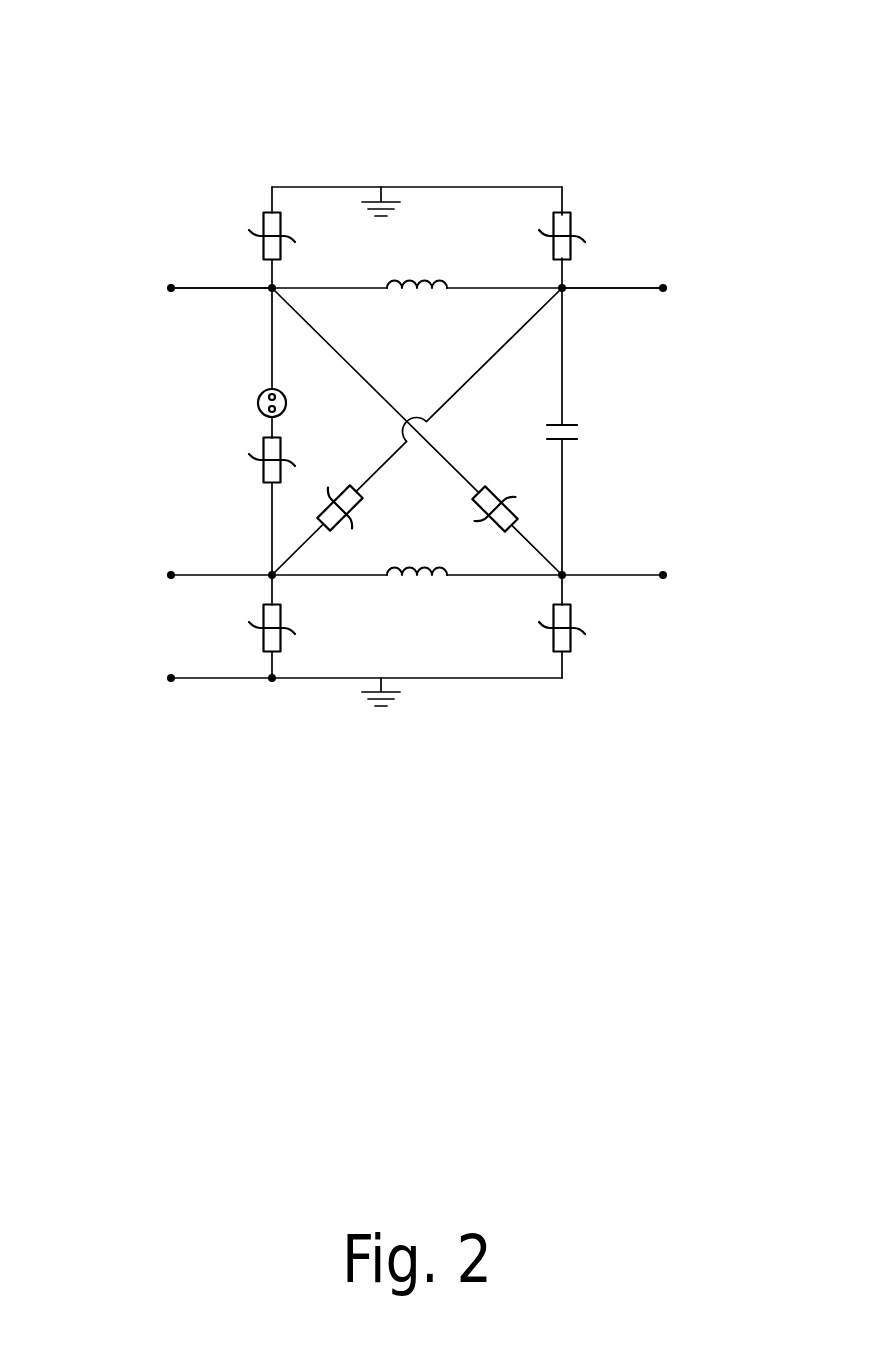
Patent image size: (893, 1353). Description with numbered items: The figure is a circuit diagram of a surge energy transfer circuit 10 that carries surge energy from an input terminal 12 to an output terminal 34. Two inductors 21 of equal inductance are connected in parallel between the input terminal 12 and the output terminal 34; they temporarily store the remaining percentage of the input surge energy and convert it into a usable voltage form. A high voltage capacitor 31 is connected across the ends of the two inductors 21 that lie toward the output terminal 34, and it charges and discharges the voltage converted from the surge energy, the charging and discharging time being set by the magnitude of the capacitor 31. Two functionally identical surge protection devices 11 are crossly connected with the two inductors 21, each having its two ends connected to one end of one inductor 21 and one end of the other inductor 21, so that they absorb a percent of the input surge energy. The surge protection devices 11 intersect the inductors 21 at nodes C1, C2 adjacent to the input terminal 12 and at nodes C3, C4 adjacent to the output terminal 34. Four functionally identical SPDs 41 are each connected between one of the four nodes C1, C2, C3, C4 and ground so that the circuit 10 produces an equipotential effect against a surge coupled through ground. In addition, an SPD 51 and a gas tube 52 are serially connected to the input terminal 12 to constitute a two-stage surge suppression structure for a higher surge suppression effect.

The surge energy transfer circuit 10 is at (655, 50).
The surge protection device 11 is at (320, 513).
The input terminal 12 is at (203, 287).
The inductor 21 is at (423, 285).
The high voltage capacitor 31 is at (580, 432).
The output terminal 34 is at (632, 287).
The SPD 41 is at (268, 222).
The SPD 51 is at (265, 452).
The gas tube 52 is at (258, 395).
The node C1 is at (272, 288).
The node C2 is at (272, 575).
The node C3 is at (562, 288).
The node C4 is at (562, 575).